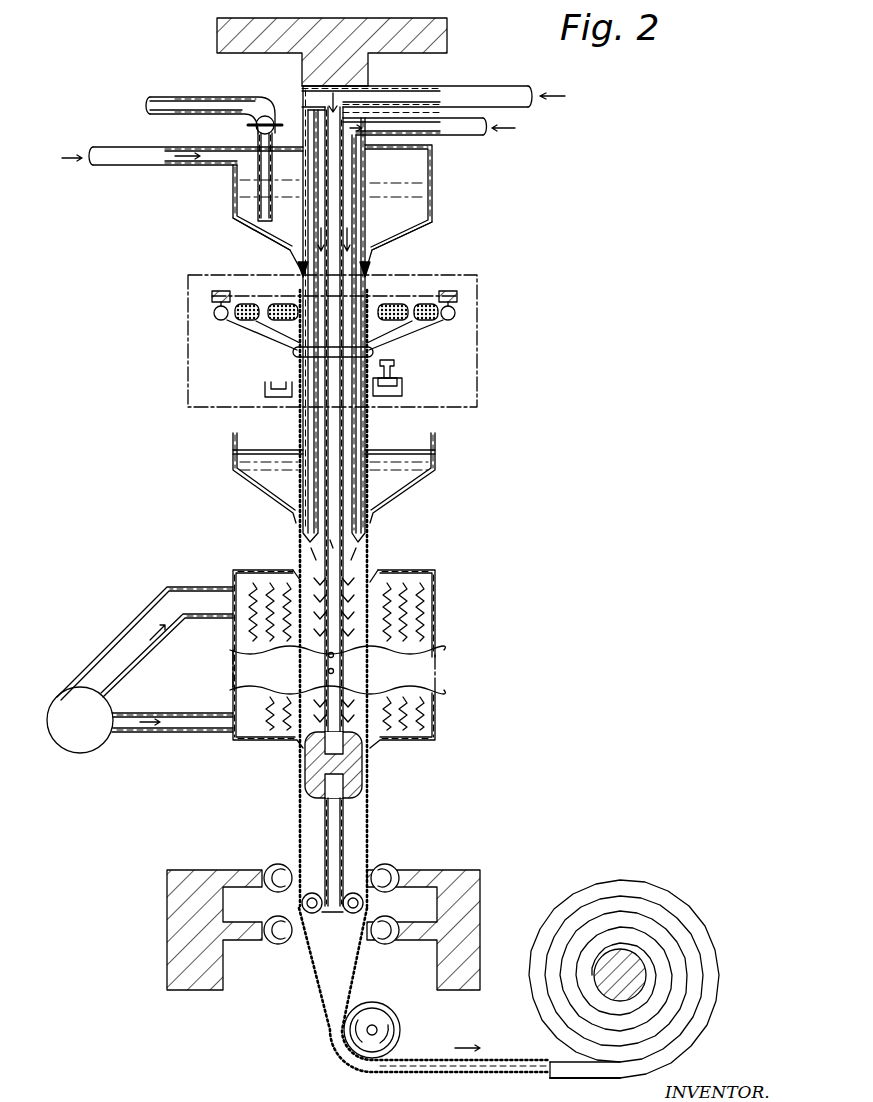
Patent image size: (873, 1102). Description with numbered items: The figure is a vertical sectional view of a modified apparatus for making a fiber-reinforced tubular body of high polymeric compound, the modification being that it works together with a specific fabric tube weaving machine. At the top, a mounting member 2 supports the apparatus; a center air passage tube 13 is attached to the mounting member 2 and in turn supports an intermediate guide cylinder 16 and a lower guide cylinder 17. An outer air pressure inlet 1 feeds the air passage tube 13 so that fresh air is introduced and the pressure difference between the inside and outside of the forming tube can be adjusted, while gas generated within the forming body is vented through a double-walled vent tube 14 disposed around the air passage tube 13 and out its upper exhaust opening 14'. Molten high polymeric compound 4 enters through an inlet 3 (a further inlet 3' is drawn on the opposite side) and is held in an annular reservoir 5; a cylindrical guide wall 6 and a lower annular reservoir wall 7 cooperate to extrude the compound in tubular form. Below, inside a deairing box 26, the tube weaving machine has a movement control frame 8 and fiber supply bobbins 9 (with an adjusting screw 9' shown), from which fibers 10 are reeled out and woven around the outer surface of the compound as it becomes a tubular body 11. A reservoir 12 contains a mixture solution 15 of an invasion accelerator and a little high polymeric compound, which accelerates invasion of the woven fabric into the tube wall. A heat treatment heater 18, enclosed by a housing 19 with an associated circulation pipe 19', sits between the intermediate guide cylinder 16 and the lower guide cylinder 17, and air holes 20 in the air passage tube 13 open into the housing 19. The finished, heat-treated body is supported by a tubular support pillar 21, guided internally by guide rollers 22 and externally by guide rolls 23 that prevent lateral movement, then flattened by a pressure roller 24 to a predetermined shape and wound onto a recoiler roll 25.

The outer air pressure inlet 1 is at (540, 93).
The mounting member 2 is at (253, 45).
The inlet 3 is at (182, 175).
The inlet pipe 3' is at (447, 158).
The molten high polymeric compound 4 is at (430, 212).
The annular reservoir 5 is at (233, 195).
The cylindrical guide wall 6 is at (300, 226).
The lower annular reservoir wall 7 is at (292, 256).
The movement control frame 8 is at (264, 391).
The fiber supply bobbins 9 is at (326, 324).
The adjusting screw 9' is at (419, 371).
The fibers 10 is at (300, 362).
The tubular body 11 is at (418, 334).
The reservoir 12 is at (433, 472).
The center air passage tube 13 is at (340, 218).
The double-walled vent tube 14 is at (313, 323).
The upper exhaust opening 14' is at (453, 123).
The mixture solution 15 is at (235, 480).
The intermediate guide cylinder 16 is at (360, 432).
The lower guide cylinder 17 is at (350, 771).
The heat treatment heater 18 is at (422, 622).
The housing 19 is at (356, 659).
The circulation pipe 19' is at (140, 670).
The air holes 20 is at (336, 667).
The tubular support pillar 21 is at (335, 818).
The guide rollers 22 is at (352, 915).
The guide rolls 23 is at (392, 920).
The pressure roller 24 is at (395, 1026).
The recoiler roll 25 is at (640, 955).
The deairing box 26 is at (188, 313).